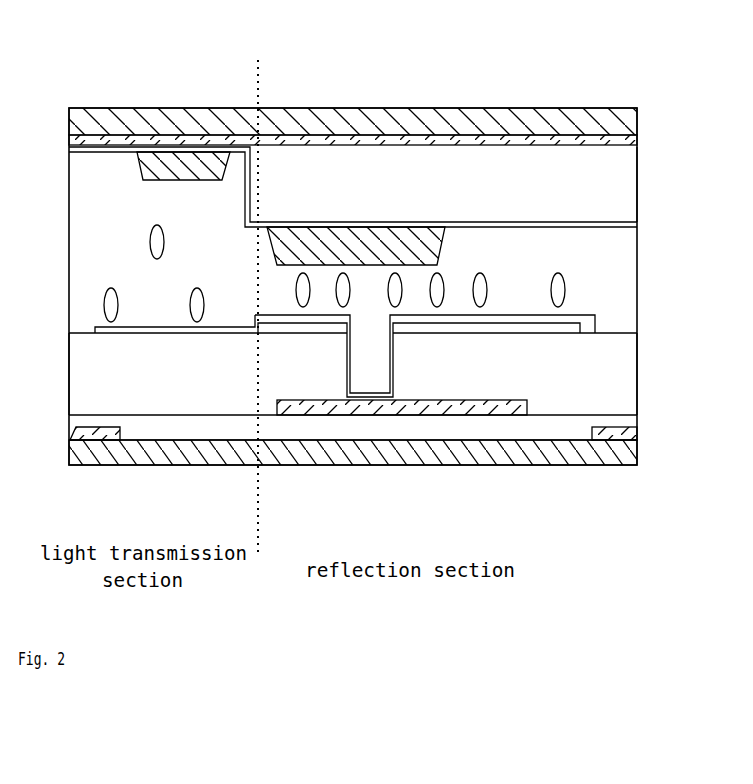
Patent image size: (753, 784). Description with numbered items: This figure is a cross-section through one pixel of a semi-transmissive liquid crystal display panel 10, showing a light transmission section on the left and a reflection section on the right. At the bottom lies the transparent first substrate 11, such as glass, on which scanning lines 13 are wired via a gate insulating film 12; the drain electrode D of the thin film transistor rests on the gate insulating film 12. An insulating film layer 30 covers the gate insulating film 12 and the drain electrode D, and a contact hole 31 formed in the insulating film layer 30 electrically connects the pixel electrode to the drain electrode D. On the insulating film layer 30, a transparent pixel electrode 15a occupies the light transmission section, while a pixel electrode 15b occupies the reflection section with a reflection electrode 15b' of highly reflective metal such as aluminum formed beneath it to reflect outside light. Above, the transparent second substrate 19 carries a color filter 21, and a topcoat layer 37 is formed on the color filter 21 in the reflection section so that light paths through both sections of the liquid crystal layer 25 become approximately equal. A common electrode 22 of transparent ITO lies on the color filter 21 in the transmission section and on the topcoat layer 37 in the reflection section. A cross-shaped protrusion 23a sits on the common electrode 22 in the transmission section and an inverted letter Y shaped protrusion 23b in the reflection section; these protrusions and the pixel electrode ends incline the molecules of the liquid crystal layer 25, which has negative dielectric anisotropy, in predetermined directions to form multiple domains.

The semi-transmissive liquid crystal display panel 10 is at (82, 25).
The transparent second substrate 19 is at (470, 108).
The color filter 21 is at (388, 140).
The common electrode 22 is at (632, 225).
The topcoat layer 37 is at (618, 190).
The cross-shaped protrusion 23a is at (172, 162).
The inverted letter Y shaped protrusion 23b is at (372, 245).
The liquid crystal layer 25 is at (122, 212).
The pixel electrode 15a is at (180, 330).
The pixel electrode 15b is at (425, 354).
The reflection electrode 15b' is at (419, 360).
The insulating film layer 30 is at (592, 363).
The gate insulating film 12 is at (572, 425).
The scanning line 13 is at (82, 432).
The transparent first substrate 11 is at (527, 467).
The contact hole 31 is at (368, 372).
The drain electrode D is at (407, 410).